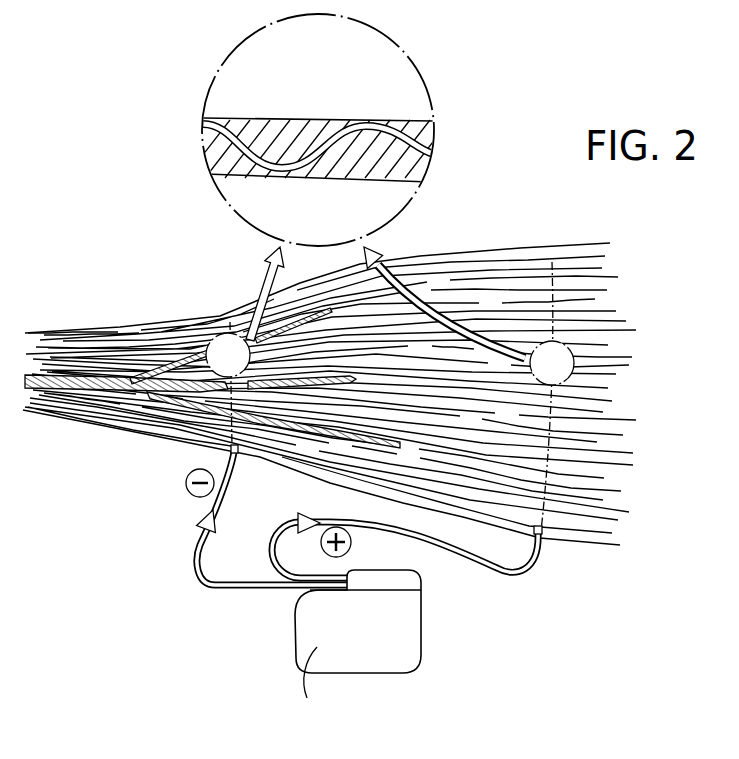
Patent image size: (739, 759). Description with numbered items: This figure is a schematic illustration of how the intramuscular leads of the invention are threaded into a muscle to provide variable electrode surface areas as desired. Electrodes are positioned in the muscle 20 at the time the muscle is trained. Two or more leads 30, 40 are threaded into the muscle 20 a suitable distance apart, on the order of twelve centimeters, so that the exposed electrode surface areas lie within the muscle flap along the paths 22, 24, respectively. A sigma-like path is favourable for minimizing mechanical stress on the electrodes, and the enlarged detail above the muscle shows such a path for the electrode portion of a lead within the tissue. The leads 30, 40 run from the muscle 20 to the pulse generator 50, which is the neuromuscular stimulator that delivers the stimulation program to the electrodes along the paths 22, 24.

The muscle 20 is at (150, 428).
The path 22 is at (215, 340).
The path 24 is at (577, 373).
The lead 30 is at (227, 447).
The lead 40 is at (540, 545).
The pulse generator 50 is at (397, 670).